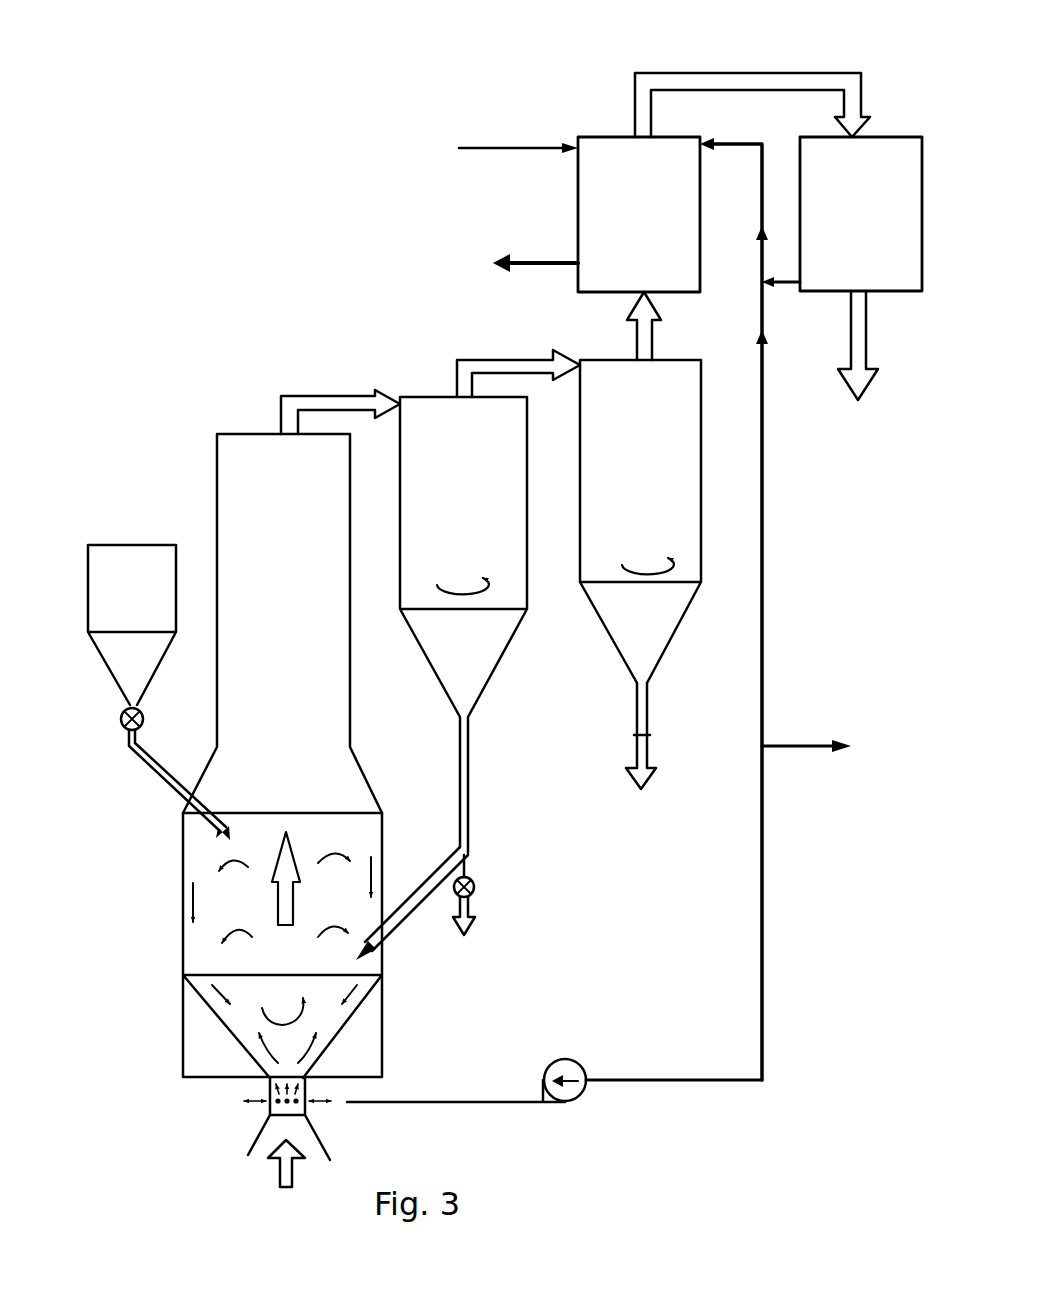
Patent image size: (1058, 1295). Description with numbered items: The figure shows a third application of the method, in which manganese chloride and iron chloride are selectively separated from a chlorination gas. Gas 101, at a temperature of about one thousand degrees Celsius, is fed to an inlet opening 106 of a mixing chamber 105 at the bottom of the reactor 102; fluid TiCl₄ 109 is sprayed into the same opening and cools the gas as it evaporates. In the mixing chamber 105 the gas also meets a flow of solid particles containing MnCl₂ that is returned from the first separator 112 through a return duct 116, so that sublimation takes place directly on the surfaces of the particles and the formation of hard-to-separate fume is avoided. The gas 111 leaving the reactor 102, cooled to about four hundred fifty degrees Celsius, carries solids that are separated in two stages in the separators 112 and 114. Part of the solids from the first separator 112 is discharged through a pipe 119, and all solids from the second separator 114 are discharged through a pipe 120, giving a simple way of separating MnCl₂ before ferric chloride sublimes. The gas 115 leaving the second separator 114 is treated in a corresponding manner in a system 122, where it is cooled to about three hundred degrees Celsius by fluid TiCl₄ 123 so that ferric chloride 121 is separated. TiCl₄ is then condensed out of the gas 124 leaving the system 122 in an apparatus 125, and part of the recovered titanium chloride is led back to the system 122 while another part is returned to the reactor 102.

The gas 101 is at (279, 1172).
The reactor 102 is at (370, 774).
The mixing chamber 105 is at (210, 903).
The inlet opening 106 is at (285, 1117).
The fluid TiCl₄ 109 is at (448, 1103).
The gas leaving the reactor 111 is at (331, 392).
The first separator 112 is at (517, 511).
The second separator 114 is at (687, 490).
The gas leaving the second separator 115 is at (634, 337).
The return duct 116 is at (427, 880).
The pipe 119 is at (469, 868).
The pipe 120 is at (641, 735).
The ferric chloride 121 is at (544, 257).
The system 122 is at (620, 211).
The fluid TiCl₄ 123 is at (737, 144).
The gas leaving the system 124 is at (746, 80).
The apparatus 125 is at (845, 209).